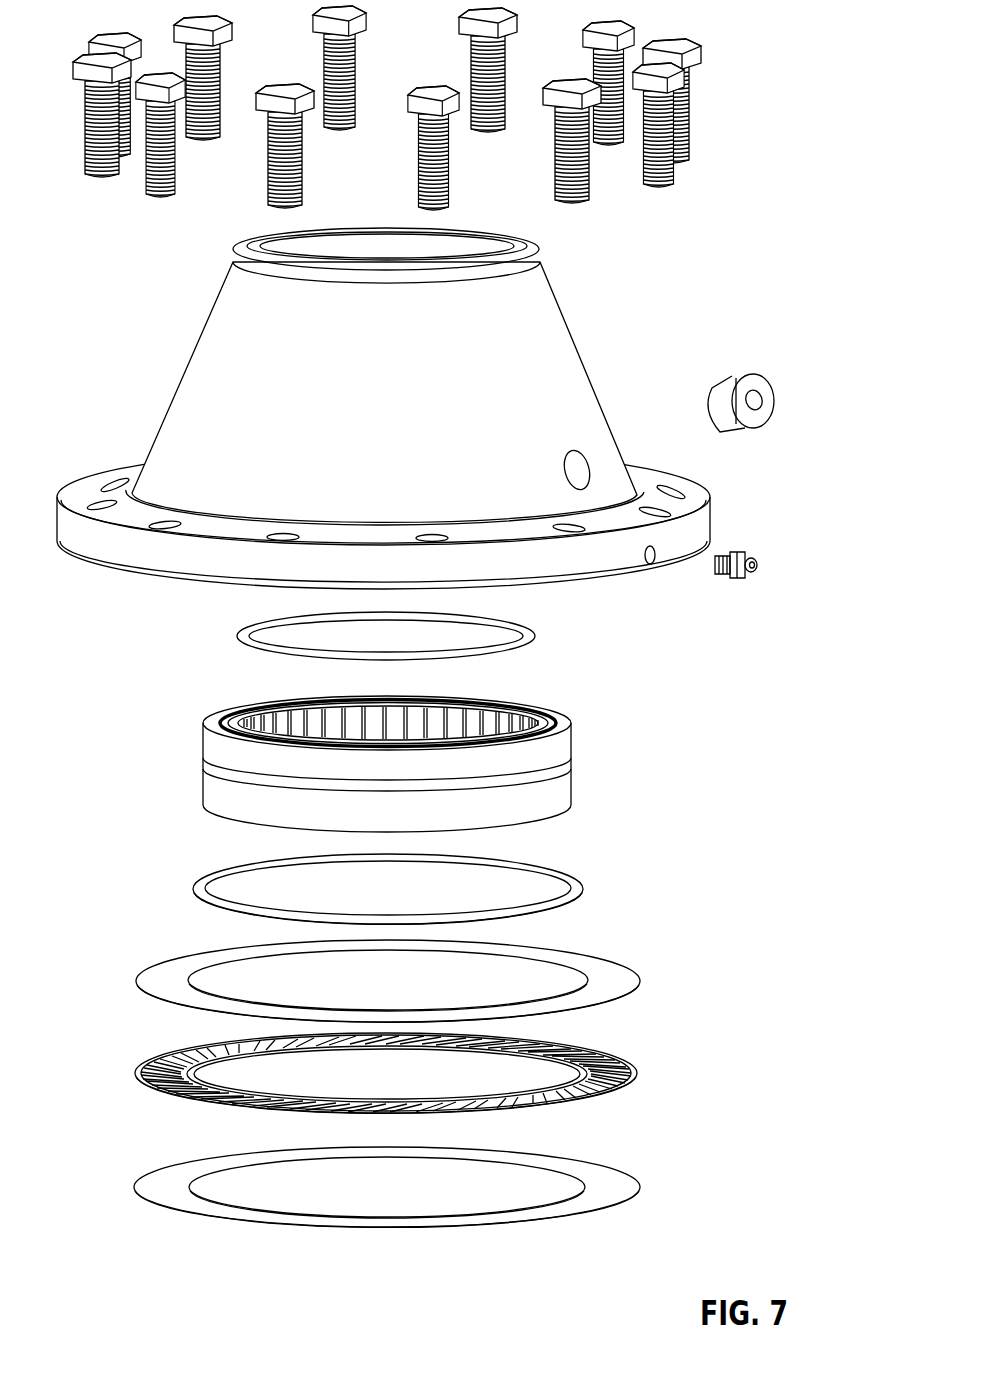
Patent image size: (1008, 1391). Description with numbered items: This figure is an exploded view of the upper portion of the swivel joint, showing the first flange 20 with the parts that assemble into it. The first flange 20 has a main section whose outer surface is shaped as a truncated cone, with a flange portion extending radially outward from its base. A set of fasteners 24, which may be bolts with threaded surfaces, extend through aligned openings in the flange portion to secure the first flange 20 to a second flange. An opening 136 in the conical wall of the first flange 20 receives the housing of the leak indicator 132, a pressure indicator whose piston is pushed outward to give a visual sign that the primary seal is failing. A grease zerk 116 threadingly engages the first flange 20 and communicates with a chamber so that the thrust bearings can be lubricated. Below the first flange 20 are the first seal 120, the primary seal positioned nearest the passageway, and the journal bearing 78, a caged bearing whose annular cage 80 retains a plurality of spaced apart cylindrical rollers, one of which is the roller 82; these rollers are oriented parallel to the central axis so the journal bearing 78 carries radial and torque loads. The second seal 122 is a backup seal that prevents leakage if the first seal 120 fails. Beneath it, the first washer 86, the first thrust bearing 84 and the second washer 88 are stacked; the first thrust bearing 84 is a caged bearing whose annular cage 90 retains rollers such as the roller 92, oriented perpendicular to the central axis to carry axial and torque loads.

The first flange 20 is at (383, 408).
The fasteners 24 is at (688, 108).
The journal bearing 78 is at (431, 744).
The annular cage 80 is at (557, 792).
The cylindrical roller 82 is at (477, 727).
The first thrust bearing 84 is at (385, 1085).
The first washer 86 is at (640, 983).
The second washer 88 is at (640, 1187).
The annular cage 90 is at (622, 1093).
The cylindrical roller 92 is at (632, 1058).
The grease zerk 116 is at (760, 565).
The first seal 120 is at (237, 633).
The second seal 122 is at (193, 887).
The leak indicator 132 is at (775, 408).
The opening 136 is at (572, 451).